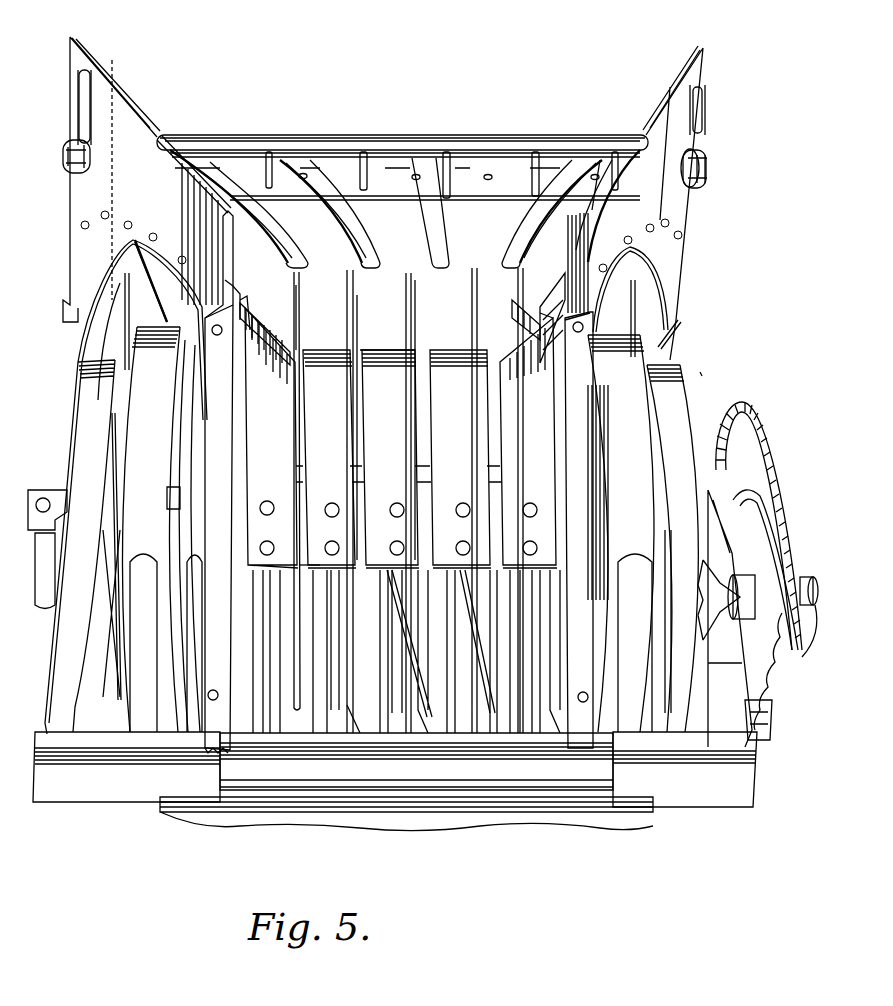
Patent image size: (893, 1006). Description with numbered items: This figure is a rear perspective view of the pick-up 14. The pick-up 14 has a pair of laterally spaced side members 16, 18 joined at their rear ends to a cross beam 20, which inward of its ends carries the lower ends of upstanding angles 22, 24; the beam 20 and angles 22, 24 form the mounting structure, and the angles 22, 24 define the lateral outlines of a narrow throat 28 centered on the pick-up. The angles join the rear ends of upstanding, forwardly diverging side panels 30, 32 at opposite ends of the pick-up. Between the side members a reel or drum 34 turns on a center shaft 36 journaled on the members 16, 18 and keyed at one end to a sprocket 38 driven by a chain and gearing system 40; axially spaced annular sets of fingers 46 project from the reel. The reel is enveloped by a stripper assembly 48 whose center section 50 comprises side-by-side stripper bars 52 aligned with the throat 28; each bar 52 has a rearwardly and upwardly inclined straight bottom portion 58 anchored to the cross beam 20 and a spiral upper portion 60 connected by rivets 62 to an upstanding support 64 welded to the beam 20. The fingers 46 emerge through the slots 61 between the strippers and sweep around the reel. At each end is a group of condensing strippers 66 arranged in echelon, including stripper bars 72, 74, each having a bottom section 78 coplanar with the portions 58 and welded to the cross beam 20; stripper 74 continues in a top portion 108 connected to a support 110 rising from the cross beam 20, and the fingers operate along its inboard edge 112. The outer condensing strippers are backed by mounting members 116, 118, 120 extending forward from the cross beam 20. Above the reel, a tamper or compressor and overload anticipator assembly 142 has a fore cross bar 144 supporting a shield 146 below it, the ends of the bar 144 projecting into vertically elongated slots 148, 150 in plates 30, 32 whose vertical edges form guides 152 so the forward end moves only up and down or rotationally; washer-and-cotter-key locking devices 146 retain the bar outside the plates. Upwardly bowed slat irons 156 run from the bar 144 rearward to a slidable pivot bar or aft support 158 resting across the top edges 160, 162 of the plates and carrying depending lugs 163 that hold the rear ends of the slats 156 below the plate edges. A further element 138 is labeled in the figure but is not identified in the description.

The pick-up 14 is at (708, 365).
The side member 16 is at (765, 725).
The side member 18 is at (68, 718).
The cross beam 20 is at (132, 792).
The upstanding angle 22 is at (593, 380).
The upstanding angle 24 is at (213, 447).
The throat 28 is at (537, 298).
The side panel 30 is at (650, 205).
The side panel 32 is at (140, 190).
The reel 34 is at (59, 483).
The center shaft 36 is at (808, 640).
The sprocket 38 is at (712, 468).
The chain and gearing system 40 is at (777, 453).
The fingers 46 is at (345, 275).
The stripper assembly 48 is at (319, 572).
The center section 50 is at (392, 314).
The stripper bar 52 is at (380, 472).
The bottom portion 58 is at (370, 720).
The upper portion 60 is at (320, 430).
The slots 61 is at (356, 350).
The rivets 62 is at (398, 546).
The upstanding support 64 is at (322, 723).
The condensing strippers 66 is at (257, 292).
The stripper bar 72 is at (237, 312).
The condensing stripper 74 is at (255, 430).
The bottom segment 78 is at (245, 642).
The top portion 108 is at (237, 382).
The support 110 is at (265, 330).
The inboard edge 112 is at (293, 353).
The mounting member 116 is at (73, 510).
The mounting member 118 is at (130, 500).
The mounting member 120 is at (183, 512).
The bracket 138 is at (235, 282).
The tamper and overload anticipator assembly 142 is at (201, 126).
The cross bar 144 is at (706, 167).
The shield 146 is at (78, 177).
The slot 148 is at (700, 98).
The slot 150 is at (84, 80).
The guides 152 is at (79, 82).
The slat irons 156 is at (250, 160).
The pivot bar 158 is at (390, 134).
The top edge 160 is at (672, 82).
The top edge 162 is at (133, 100).
The depending lugs 163 is at (360, 152).